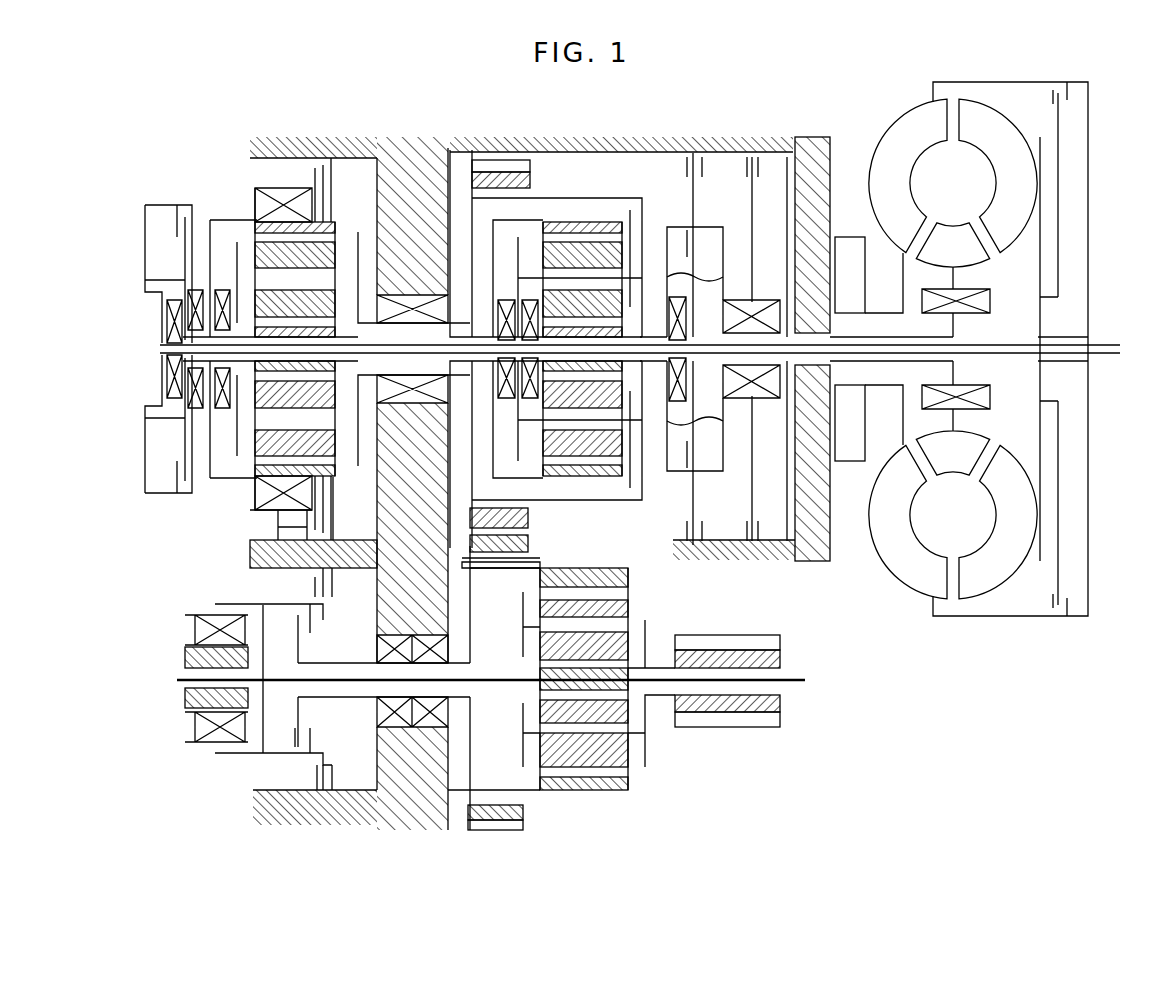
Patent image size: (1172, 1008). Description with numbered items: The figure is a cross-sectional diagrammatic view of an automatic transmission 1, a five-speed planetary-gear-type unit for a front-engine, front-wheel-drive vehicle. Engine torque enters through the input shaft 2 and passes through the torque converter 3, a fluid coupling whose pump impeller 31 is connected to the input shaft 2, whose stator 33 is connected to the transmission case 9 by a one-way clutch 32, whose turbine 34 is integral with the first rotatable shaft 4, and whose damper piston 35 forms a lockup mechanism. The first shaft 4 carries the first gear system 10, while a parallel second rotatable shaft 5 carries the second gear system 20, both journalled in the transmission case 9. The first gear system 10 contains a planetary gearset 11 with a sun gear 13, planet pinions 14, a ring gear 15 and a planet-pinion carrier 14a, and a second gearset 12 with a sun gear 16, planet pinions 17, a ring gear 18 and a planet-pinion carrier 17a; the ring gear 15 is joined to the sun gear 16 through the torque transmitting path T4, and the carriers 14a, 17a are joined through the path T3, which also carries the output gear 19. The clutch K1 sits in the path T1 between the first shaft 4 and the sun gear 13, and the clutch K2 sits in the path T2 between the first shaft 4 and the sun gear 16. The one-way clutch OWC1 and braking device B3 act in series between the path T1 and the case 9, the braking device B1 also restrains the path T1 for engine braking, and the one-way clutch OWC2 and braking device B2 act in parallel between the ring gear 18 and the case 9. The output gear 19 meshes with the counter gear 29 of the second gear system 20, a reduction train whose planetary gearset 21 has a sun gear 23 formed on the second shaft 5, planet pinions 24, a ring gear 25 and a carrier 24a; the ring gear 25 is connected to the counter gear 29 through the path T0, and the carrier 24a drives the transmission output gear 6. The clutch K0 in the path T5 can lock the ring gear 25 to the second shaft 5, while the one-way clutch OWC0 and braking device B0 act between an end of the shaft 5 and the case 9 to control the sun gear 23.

The automatic transmission 1 is at (194, 129).
The input shaft 2 is at (1120, 350).
The torque converter 3 is at (1008, 334).
The first rotatable shaft 4 is at (1008, 355).
The second rotatable shaft 5 is at (793, 683).
The transmission output gear 6 is at (740, 635).
The transmission case 9 is at (517, 140).
The first gear system 10 is at (467, 298).
The planetary gearset 11 is at (647, 228).
The second gearset 12 is at (337, 236).
The sun gear 13 is at (583, 257).
The planet pinions 14 is at (618, 226).
The planet-pinion carrier 14a is at (663, 204).
The ring gear 15 is at (567, 478).
The sun gear 16 is at (275, 322).
The planet pinions 17 is at (313, 228).
The planet-pinion carrier 17a is at (362, 230).
The ring gear 18 is at (334, 486).
The output gear 19 is at (490, 170).
The second gear system 20 is at (596, 712).
The planetary gearset 21 is at (636, 797).
The sun gear 23 is at (600, 650).
The planet pinions 24 is at (540, 607).
The planet-pinion carrier 24a is at (645, 722).
The ring gear 25 is at (628, 570).
The counter gear 29 is at (465, 566).
The pump impeller 31 is at (915, 117).
The one-way clutch 32 is at (985, 299).
The stator 33 is at (980, 258).
The turbine 34 is at (1030, 140).
The damper piston 35 is at (1090, 93).
The braking device B0 is at (317, 586).
The braking device B1 is at (703, 170).
The braking device B2 is at (326, 215).
The braking device B3 is at (757, 170).
The clutch K0 is at (311, 618).
The clutch K1 is at (703, 247).
The clutch K2 is at (177, 224).
The torque transmitting path T0 is at (528, 563).
The torque transmitting path T1 is at (694, 279).
The torque transmitting path T2 is at (185, 268).
The torque transmitting path T3 is at (463, 225).
The torque transmitting path T4 is at (480, 218).
The torque transmitting path T5 is at (263, 640).
The one-way clutch OWC0 is at (190, 725).
The one-way clutch OWC1 is at (787, 158).
The one-way clutch OWC2 is at (255, 206).